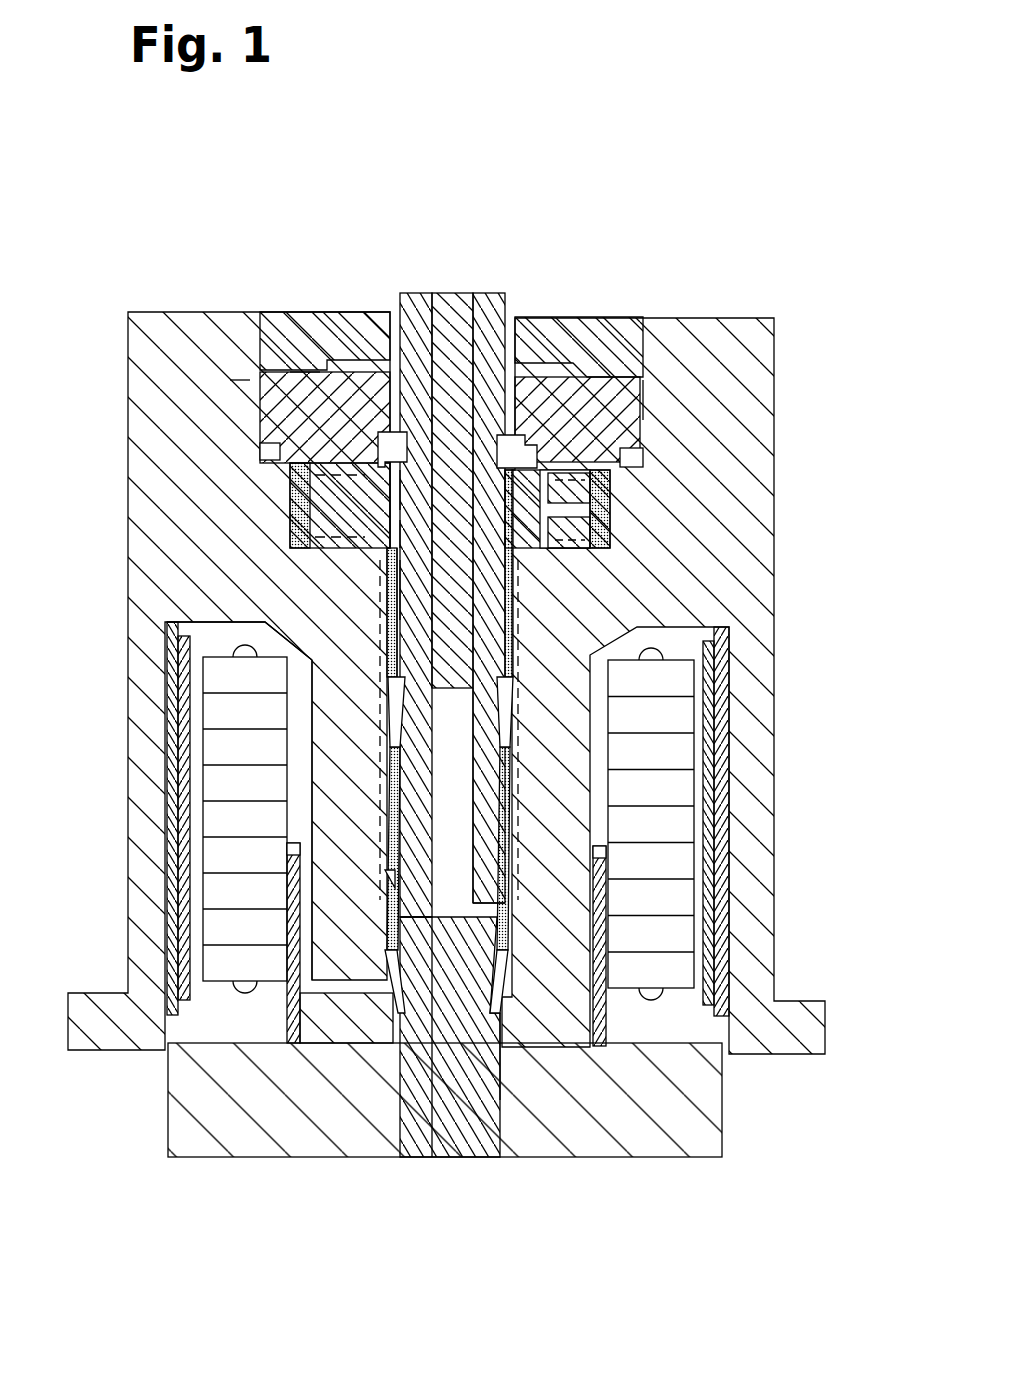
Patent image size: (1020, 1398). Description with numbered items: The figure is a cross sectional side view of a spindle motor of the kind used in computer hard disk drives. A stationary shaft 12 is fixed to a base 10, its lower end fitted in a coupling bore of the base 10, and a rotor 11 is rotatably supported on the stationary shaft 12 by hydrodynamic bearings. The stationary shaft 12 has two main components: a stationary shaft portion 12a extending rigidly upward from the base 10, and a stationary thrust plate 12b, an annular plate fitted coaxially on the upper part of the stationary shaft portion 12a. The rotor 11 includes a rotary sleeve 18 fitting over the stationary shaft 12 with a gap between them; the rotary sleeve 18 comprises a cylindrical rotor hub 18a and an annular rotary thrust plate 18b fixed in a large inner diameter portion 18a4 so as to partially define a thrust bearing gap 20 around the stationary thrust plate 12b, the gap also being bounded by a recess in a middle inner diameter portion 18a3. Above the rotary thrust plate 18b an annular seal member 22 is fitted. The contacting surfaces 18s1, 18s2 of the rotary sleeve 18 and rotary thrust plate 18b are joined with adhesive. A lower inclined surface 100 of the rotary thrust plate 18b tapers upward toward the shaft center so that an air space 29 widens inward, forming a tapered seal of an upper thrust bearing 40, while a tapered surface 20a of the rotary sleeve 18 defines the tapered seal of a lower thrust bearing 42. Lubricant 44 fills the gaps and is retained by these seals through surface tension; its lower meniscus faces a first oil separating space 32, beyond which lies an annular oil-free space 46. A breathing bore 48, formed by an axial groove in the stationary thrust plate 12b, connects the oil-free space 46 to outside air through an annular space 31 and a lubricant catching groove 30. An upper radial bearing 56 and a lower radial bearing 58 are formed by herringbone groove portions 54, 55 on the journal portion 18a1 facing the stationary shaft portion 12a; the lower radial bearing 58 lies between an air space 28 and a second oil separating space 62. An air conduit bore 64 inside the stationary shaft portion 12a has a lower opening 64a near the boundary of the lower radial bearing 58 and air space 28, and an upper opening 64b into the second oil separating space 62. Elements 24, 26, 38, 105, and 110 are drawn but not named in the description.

The base 10 is at (692, 1150).
The rotor 11 is at (806, 458).
The stationary shaft 12 is at (453, 526).
The stationary shaft portion 12a is at (440, 335).
The stationary thrust plate 12b is at (503, 435).
The rotary sleeve 18 is at (446, 772).
The rotor hub 18a is at (168, 347).
The journal portion 18a1 is at (333, 972).
The middle inner diameter portion 18a3 is at (275, 522).
The large inner diameter portion 18a4 is at (238, 388).
The rotary thrust plate 18b is at (303, 372).
The contacting surface 18s1 is at (618, 385).
The contacting surface 18s2 is at (645, 407).
The thrust bearing gap 20 is at (275, 556).
The tapered surface 20a is at (400, 575).
The seal member 22 is at (322, 355).
The coil bobbin 24 is at (172, 886).
The coil 26 is at (170, 946).
The air space 28 is at (522, 906).
The air space 29 is at (386, 430).
The lubricant catching groove 30 is at (530, 445).
The annular space 31 is at (537, 373).
The first oil separating space 32 is at (388, 561).
The bearing 38 is at (333, 525).
The upper thrust bearing 40 is at (313, 447).
The lower thrust bearing 42 is at (296, 552).
The lubricant 44 is at (290, 478).
The annular oil-free space 46 is at (545, 562).
The breathing bore 48 is at (398, 492).
The herringbone groove portion 54 is at (518, 629).
The herringbone groove portion 55 is at (510, 889).
The upper radial bearing 56 is at (400, 642).
The lower radial bearing 58 is at (385, 873).
The second oil separating space 62 is at (507, 723).
The air conduit bore 64 is at (442, 893).
The lower opening 64a is at (490, 911).
The upper opening 64b is at (410, 694).
The lower inclined surface 100 is at (398, 536).
The retaining ring 105 is at (400, 452).
The lower seal 110 is at (393, 987).